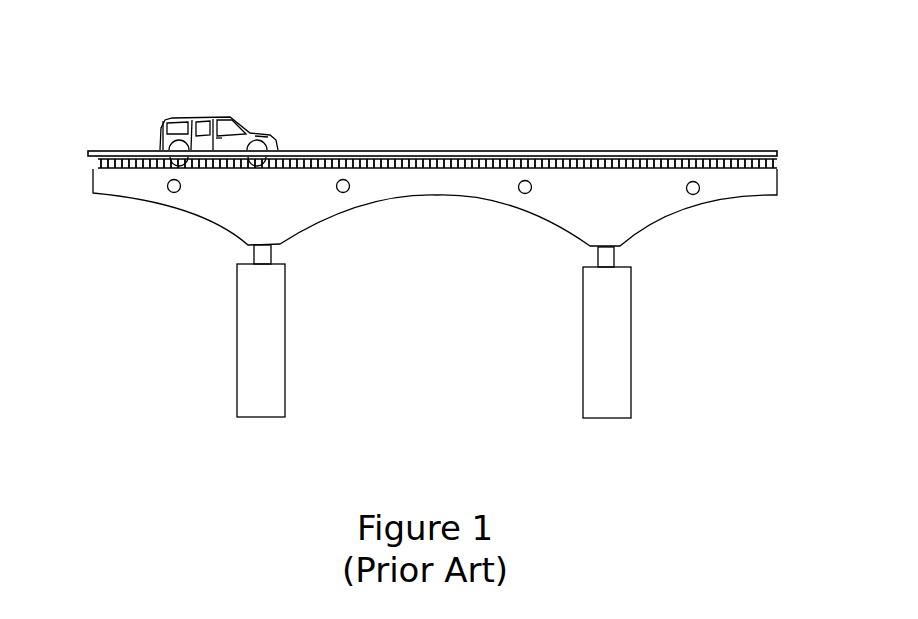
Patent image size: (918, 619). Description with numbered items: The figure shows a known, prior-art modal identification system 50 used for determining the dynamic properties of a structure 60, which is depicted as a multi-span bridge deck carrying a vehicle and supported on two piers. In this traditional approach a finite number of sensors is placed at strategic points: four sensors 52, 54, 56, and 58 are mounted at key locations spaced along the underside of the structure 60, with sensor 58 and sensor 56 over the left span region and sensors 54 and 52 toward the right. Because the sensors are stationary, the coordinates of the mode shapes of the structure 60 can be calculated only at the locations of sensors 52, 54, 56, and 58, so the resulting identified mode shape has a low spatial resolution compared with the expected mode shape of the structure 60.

The modal identification system 50 is at (729, 69).
The sensor 52 is at (699, 190).
The sensor 54 is at (519, 191).
The sensor 56 is at (349, 188).
The sensor 58 is at (168, 188).
The structure 60 is at (92, 174).